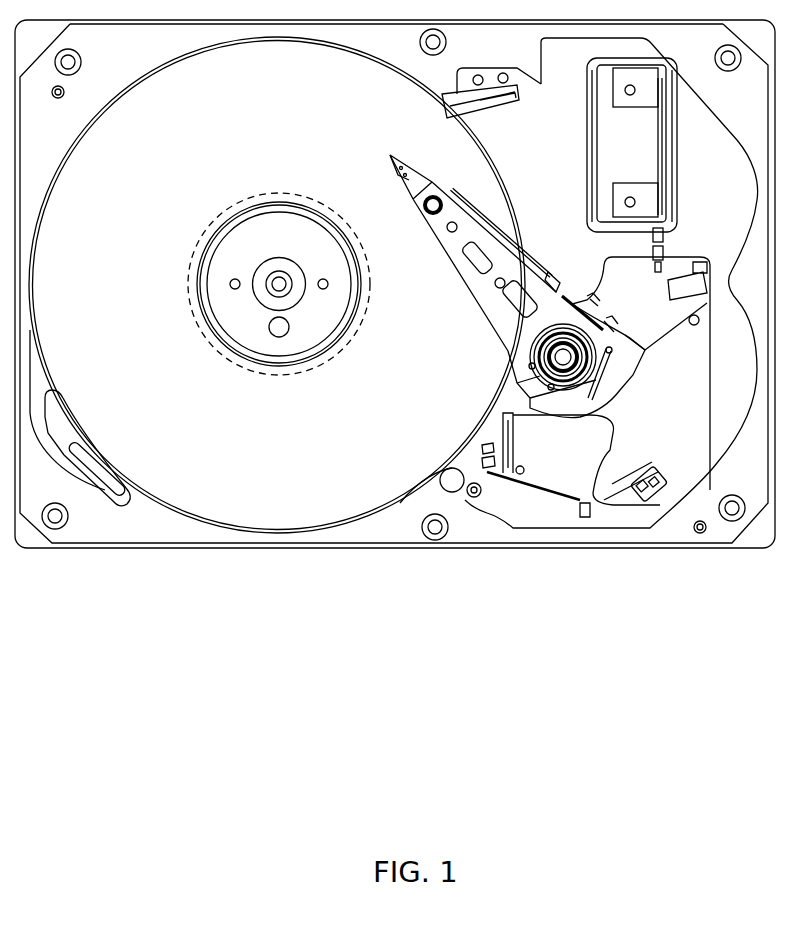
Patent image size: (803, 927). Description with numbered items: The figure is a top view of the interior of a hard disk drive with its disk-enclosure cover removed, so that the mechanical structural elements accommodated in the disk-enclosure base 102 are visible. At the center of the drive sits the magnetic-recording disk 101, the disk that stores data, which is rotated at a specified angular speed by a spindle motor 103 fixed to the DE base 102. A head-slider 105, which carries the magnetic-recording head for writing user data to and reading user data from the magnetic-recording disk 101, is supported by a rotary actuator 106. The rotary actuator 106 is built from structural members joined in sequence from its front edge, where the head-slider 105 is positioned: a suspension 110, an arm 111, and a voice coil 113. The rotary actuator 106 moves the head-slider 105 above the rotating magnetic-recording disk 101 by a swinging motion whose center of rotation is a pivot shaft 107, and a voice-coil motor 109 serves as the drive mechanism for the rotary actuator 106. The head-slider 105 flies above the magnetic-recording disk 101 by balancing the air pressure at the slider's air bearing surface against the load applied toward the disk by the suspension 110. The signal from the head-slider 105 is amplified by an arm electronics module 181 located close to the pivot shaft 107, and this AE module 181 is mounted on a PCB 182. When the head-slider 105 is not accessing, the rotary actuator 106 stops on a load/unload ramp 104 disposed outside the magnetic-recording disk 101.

The magnetic-recording disk 101 is at (504, 167).
The disk-enclosure base 102 is at (330, 560).
The spindle motor 103 is at (262, 375).
The load/unload ramp 104 is at (445, 104).
The head-slider 105 is at (398, 160).
The rotary actuator 106 is at (441, 256).
The pivot shaft 107 is at (560, 357).
The voice-coil motor 109 is at (512, 500).
The suspension 110 is at (424, 208).
The arm 111 is at (484, 300).
The voice coil 113 is at (613, 417).
The arm electronics module 181 is at (597, 305).
The PCB 182 is at (607, 327).